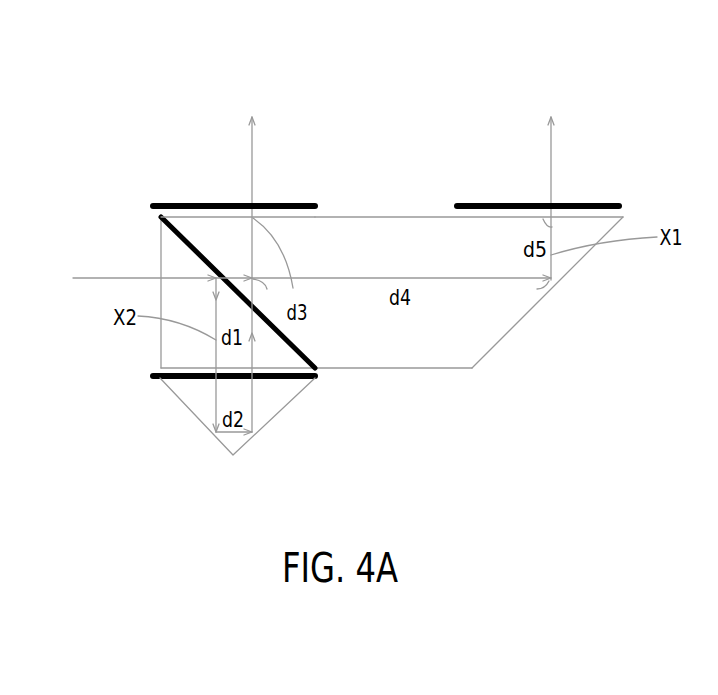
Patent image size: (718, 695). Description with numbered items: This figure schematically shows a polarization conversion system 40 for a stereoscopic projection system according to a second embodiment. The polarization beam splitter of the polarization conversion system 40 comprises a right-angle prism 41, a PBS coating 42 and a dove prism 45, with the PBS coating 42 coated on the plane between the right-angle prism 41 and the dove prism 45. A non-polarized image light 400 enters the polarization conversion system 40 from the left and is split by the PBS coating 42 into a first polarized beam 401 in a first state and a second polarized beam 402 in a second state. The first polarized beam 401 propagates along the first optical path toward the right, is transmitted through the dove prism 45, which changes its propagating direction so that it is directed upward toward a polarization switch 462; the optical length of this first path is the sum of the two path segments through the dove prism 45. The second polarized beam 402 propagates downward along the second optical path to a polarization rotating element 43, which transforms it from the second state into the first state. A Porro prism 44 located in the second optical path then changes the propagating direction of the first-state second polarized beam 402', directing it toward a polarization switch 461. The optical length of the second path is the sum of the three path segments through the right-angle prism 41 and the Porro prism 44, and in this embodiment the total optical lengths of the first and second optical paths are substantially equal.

The polarization conversion system 40 is at (650, 65).
The right-angle prism 41 is at (180, 263).
The PBS coating 42 is at (160, 217).
The polarization rotating element 43 is at (315, 378).
The Porro prism 44 is at (283, 400).
The dove prism 45 is at (477, 337).
The non-polarized image light 400 is at (180, 278).
The first polarized beam 401 is at (473, 278).
The second polarized beam 402 is at (185, 371).
The first-state second polarized beam 402' is at (236, 312).
The polarization switch 461 is at (188, 202).
The polarization switch 462 is at (494, 202).